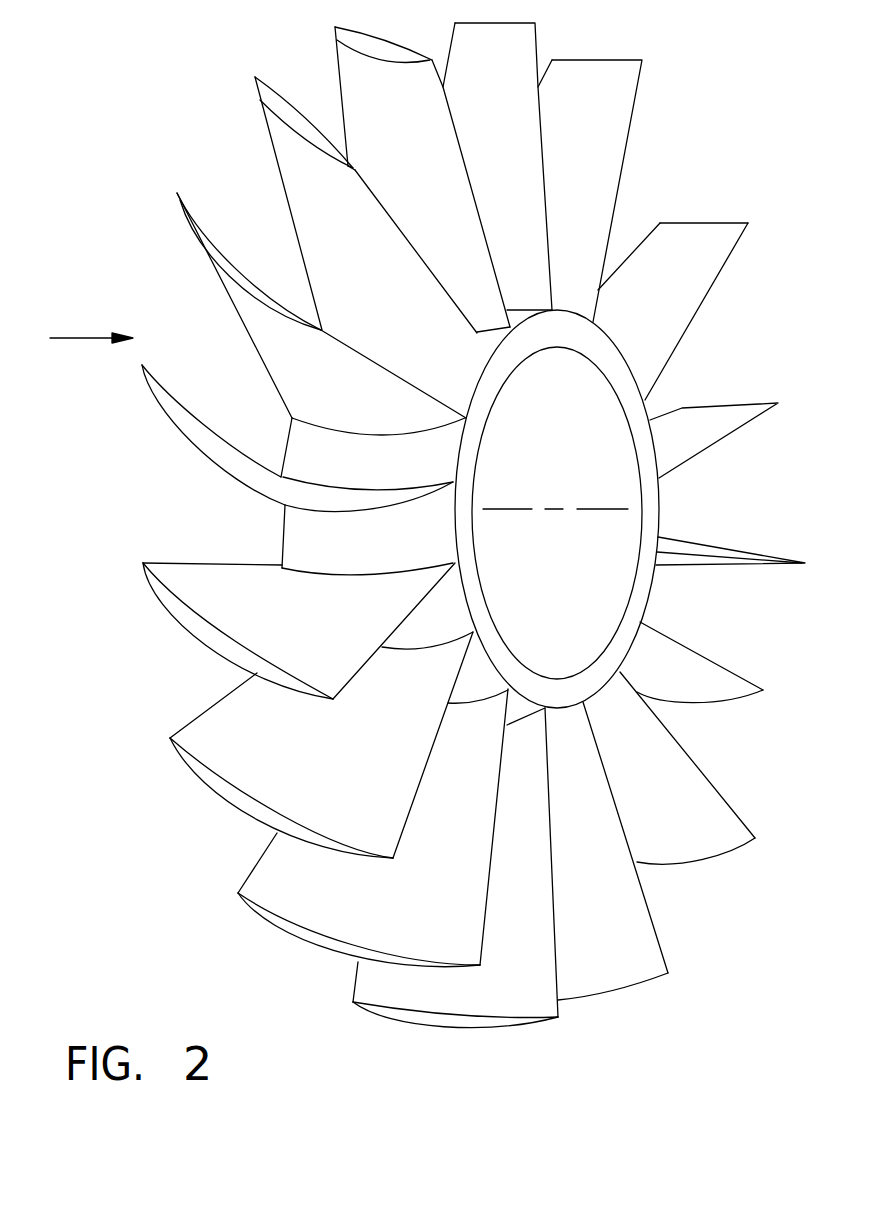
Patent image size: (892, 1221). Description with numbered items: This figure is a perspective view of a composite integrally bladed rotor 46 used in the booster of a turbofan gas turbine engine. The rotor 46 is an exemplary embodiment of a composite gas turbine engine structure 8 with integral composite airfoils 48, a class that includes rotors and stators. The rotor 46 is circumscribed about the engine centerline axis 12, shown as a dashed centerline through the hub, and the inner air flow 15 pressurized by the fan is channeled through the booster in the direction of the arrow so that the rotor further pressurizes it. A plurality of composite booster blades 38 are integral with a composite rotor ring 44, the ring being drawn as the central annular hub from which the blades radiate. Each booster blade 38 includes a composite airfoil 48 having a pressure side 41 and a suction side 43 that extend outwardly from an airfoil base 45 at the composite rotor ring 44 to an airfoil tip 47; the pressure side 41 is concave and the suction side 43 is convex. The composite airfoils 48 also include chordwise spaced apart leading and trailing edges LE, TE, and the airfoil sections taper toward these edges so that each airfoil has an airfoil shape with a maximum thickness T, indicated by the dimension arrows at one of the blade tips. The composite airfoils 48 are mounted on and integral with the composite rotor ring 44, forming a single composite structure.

The composite gas turbine engine structure 8 is at (667, 492).
The engine centerline axis 12 is at (512, 508).
The inner air flow 15 is at (83, 338).
The composite booster blade 38 is at (698, 222).
The pressure side 41 is at (213, 437).
The suction side 43 is at (315, 192).
The composite rotor ring 44 is at (465, 462).
The airfoil base 45 is at (393, 435).
The composite integrally bladed rotor 46 is at (205, 825).
The airfoil tip 47 is at (267, 313).
The composite airfoil 48 is at (702, 303).
The leading edge LE is at (177, 192).
The trailing edge TE is at (347, 345).
The maximum thickness T is at (148, 665).